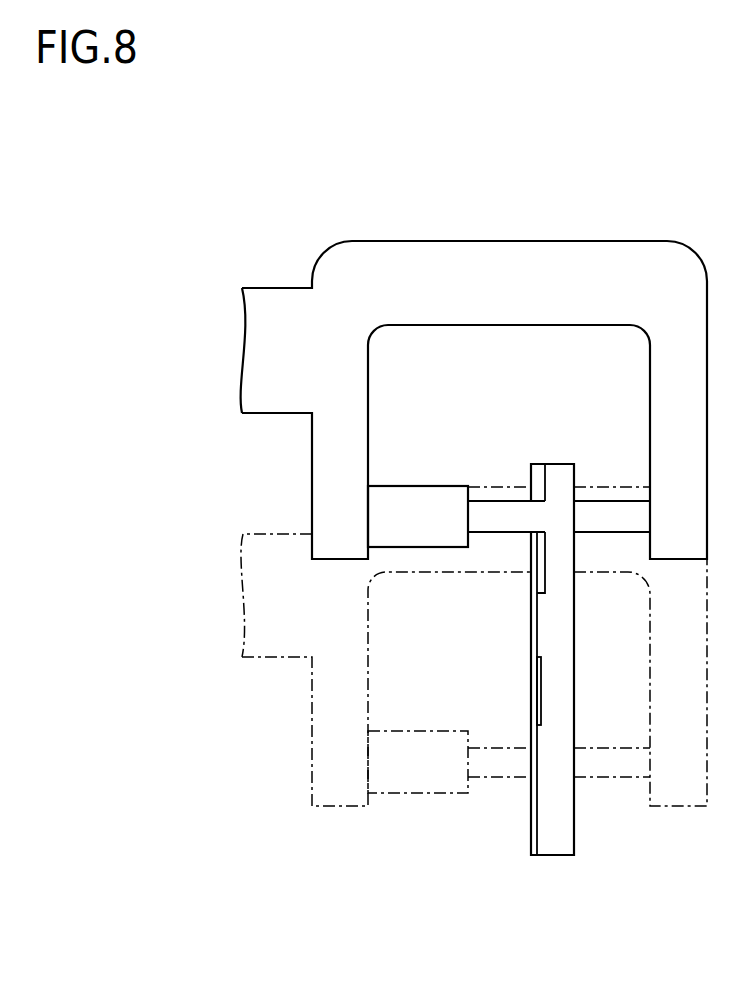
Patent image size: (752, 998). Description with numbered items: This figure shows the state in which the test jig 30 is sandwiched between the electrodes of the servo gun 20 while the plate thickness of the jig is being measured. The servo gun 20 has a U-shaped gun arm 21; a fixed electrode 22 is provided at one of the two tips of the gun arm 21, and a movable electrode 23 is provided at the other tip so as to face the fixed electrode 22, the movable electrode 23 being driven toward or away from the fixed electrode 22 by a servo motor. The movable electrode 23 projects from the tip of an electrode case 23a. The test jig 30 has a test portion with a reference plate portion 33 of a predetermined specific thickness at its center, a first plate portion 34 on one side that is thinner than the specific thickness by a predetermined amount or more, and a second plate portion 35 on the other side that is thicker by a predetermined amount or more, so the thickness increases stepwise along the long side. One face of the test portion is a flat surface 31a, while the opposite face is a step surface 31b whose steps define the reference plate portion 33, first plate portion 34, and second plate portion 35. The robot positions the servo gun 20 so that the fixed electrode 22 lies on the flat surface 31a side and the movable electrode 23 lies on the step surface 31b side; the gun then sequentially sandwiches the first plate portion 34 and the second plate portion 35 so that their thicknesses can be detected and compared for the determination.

The servo gun 20 is at (190, 213).
The gun arm 21 is at (602, 255).
The fixed electrode 22 is at (598, 510).
The movable electrode 23 is at (497, 510).
The electrode case 23a is at (412, 500).
The test jig 30 is at (538, 883).
The flat surface 31a is at (574, 654).
The step surface 31b is at (524, 613).
The reference plate portion 33 is at (540, 646).
The first plate portion 34 is at (545, 472).
The second plate portion 35 is at (537, 818).